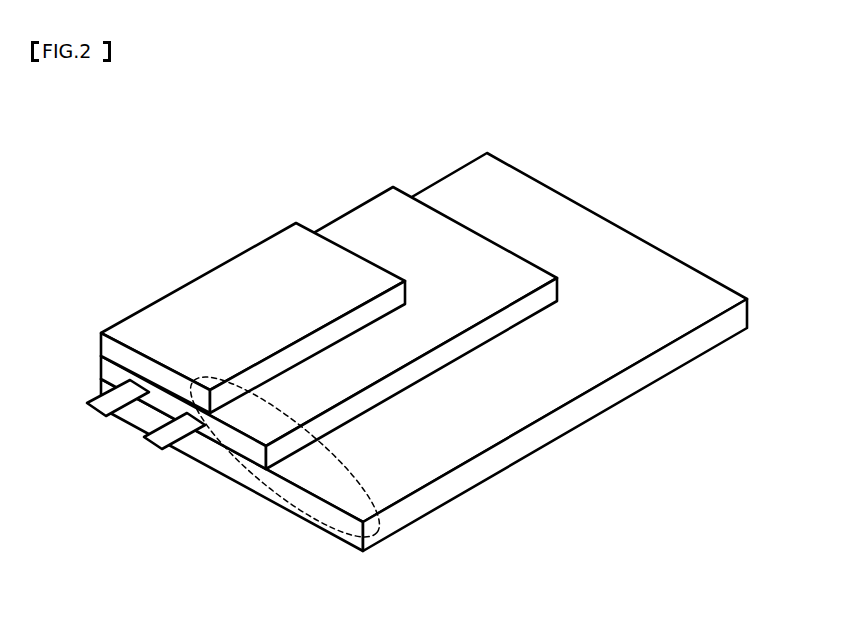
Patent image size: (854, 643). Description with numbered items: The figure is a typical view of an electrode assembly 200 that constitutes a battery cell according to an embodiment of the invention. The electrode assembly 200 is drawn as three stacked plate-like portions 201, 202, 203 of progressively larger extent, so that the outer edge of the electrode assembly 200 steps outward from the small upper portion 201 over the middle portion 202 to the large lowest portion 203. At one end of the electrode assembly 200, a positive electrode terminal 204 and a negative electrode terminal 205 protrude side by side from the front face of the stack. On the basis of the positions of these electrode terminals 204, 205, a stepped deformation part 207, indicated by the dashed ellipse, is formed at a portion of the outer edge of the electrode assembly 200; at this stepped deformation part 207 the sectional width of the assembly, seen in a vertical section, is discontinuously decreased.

The electrode assembly 200 is at (94, 153).
The first battery cell 201 is at (328, 286).
The second battery cell 202 is at (467, 273).
The third battery cell 203 is at (609, 268).
The positive electrode terminal 204 is at (98, 410).
The negative electrode terminal 205 is at (156, 443).
The stepped deformation part 207 is at (350, 480).